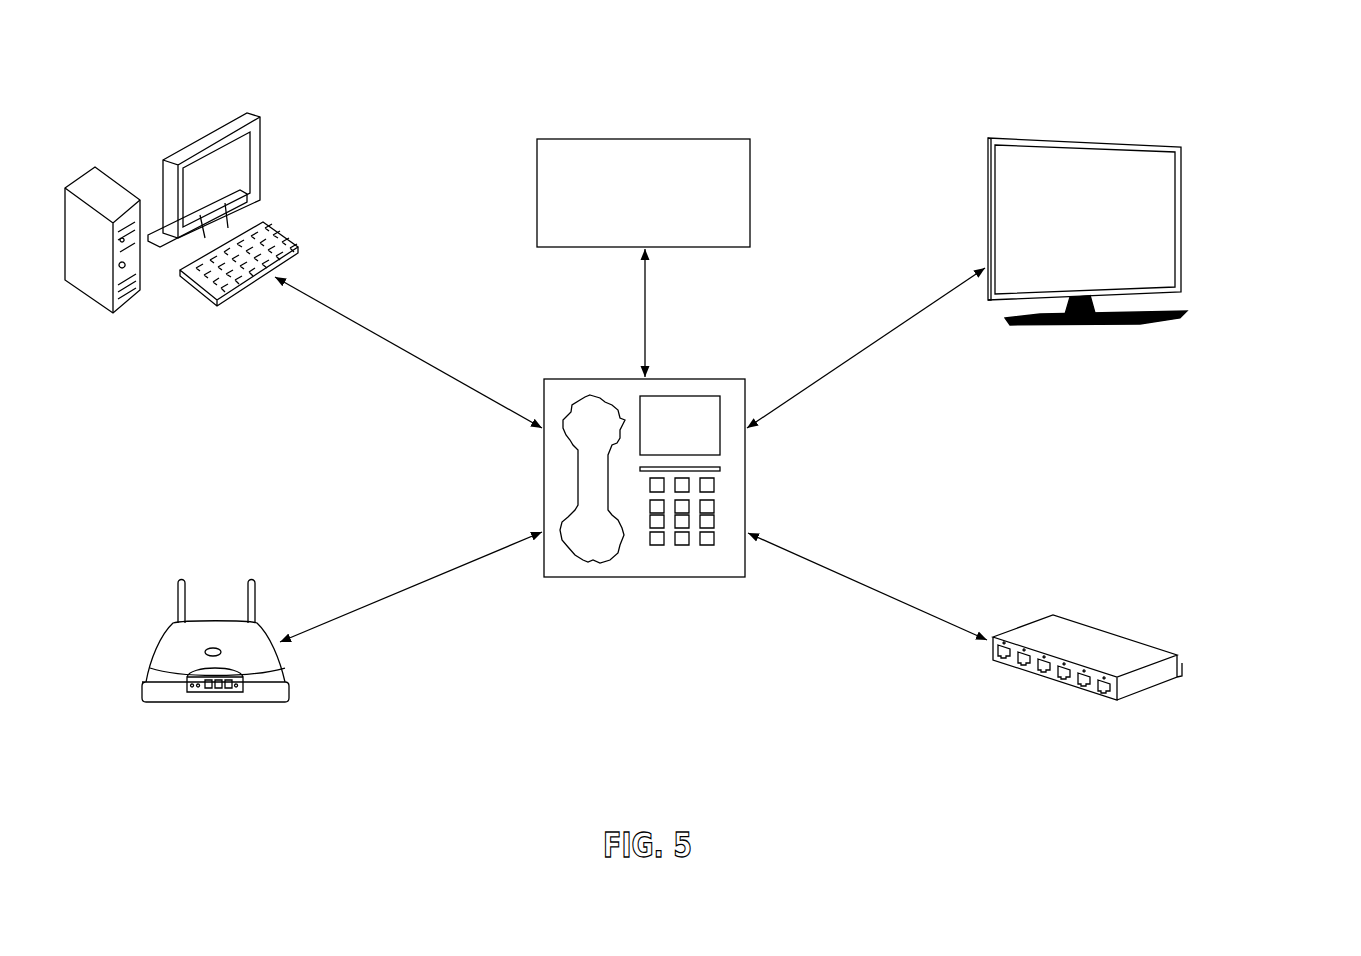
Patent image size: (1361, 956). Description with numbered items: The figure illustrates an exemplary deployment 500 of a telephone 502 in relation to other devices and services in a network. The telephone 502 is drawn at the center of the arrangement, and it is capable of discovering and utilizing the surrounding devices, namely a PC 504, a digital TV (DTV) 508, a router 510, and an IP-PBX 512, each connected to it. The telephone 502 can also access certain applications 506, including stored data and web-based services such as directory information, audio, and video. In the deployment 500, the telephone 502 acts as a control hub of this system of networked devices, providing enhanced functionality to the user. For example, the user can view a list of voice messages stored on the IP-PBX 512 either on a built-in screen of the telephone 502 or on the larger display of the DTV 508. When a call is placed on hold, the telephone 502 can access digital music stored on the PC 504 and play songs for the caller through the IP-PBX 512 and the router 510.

The deployment 500 is at (1303, 100).
The telephone 502 is at (746, 492).
The PC 504 is at (100, 170).
The applications 506 is at (750, 188).
The digital TV (DTV) 508 is at (1113, 143).
The router 510 is at (267, 628).
The IP-PBX 512 is at (1083, 625).